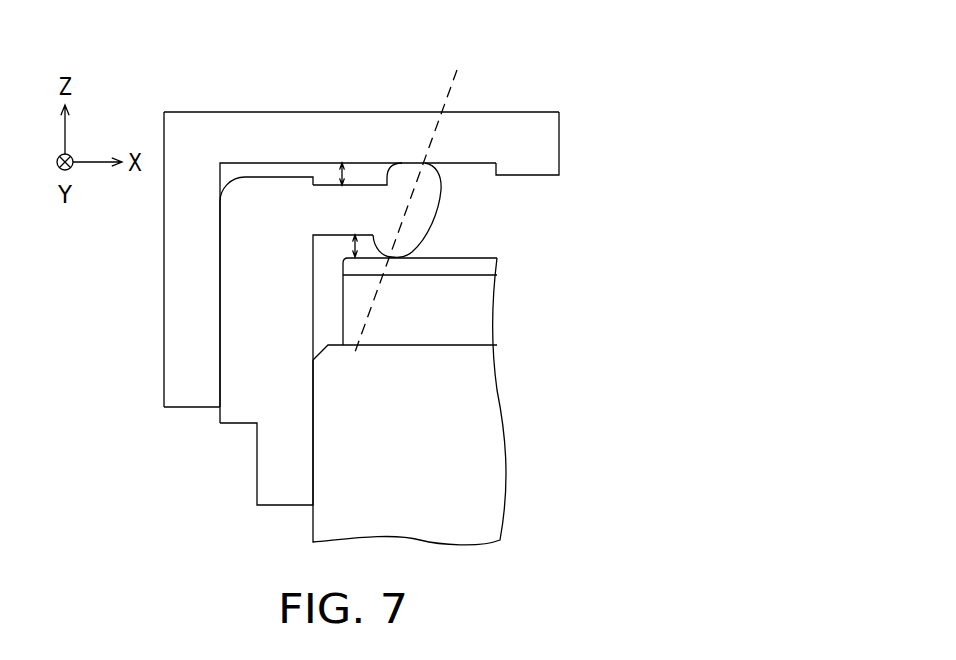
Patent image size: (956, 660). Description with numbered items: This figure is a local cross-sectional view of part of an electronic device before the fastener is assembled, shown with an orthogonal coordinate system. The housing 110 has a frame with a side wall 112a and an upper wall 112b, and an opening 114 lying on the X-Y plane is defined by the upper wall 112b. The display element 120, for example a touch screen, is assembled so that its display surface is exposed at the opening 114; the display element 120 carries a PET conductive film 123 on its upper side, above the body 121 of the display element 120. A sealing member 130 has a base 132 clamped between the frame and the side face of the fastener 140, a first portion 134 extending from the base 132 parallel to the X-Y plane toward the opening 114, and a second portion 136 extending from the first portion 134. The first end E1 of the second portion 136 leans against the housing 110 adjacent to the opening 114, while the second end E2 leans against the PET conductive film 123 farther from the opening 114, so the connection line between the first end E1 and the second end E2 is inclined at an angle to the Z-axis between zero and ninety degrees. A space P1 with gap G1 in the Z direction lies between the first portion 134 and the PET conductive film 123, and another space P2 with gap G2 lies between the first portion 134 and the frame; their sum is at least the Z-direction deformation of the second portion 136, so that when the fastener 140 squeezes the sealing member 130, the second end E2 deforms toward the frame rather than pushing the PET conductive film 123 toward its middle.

The housing 110 is at (326, 227).
The side wall 112a is at (151, 403).
The upper wall 112b is at (211, 101).
The opening 114 is at (571, 140).
The display element 120 is at (524, 301).
The base of movable module 121 is at (487, 310).
The PET conductive film 123 is at (490, 267).
The sealing member 130 is at (309, 288).
The base 132 is at (240, 365).
The first portion 134 is at (365, 210).
The second portion 136 is at (422, 208).
The fastener 140 is at (497, 458).
The space P1 is at (312, 244).
The space P2 is at (325, 165).
The gap G1 is at (354, 246).
The gap G2 is at (343, 174).
The first end E1 is at (419, 153).
The second end E2 is at (394, 270).